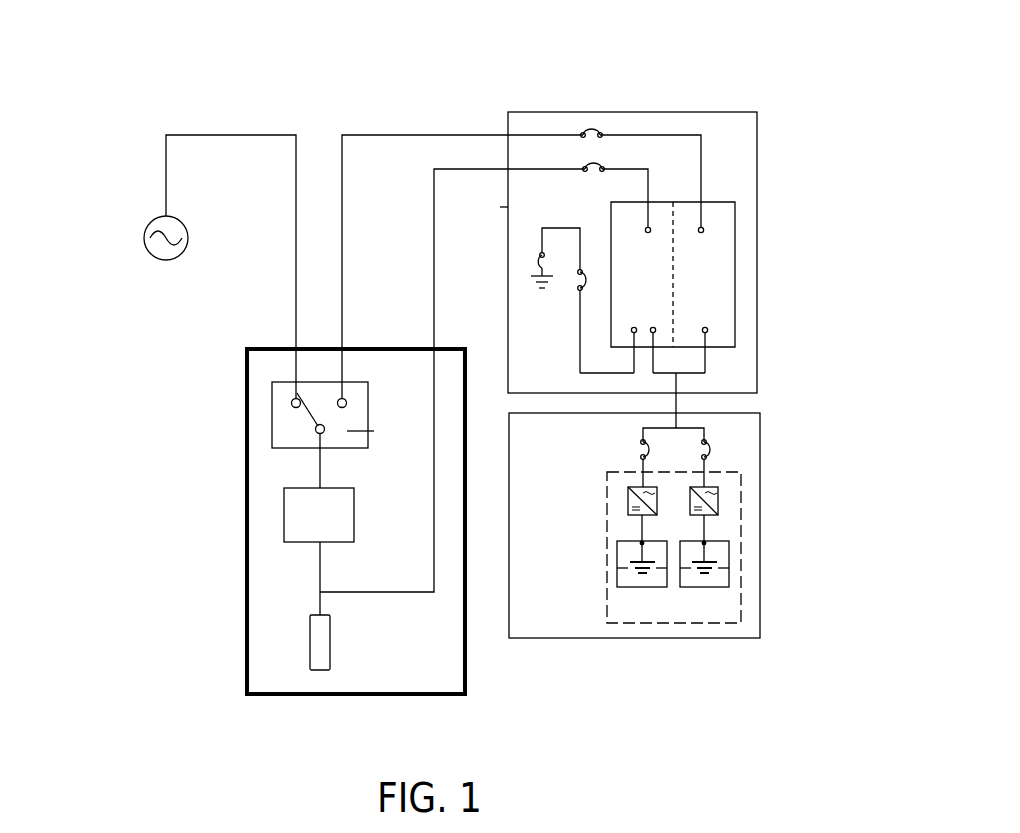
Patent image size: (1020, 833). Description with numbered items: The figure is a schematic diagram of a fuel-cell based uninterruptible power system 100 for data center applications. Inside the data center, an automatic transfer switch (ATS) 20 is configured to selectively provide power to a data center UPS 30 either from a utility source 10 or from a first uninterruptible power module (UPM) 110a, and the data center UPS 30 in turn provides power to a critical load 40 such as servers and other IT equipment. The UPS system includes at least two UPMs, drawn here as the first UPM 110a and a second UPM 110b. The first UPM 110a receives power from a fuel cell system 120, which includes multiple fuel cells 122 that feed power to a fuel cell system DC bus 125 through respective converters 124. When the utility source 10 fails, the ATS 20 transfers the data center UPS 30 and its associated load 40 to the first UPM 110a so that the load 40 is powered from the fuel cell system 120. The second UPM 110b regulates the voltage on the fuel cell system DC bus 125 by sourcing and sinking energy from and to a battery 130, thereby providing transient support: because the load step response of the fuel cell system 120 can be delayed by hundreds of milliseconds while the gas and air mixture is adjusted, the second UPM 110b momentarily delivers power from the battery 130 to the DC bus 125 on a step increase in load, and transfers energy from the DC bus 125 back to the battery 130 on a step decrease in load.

The power system 100 is at (469, 349).
The utility source 10 is at (114, 238).
The automatic transfer switch 20 is at (290, 422).
The data center UPS 30 is at (261, 551).
The critical load 40 is at (310, 632).
The first uninterruptible power module 110a is at (764, 271).
The second uninterruptible power module 110b is at (593, 279).
The fuel cell system 120 is at (691, 500).
The fuel cells 122 is at (727, 547).
The converters 124 is at (743, 491).
The fuel cell system DC bus 125 is at (759, 374).
The battery 130 is at (518, 296).